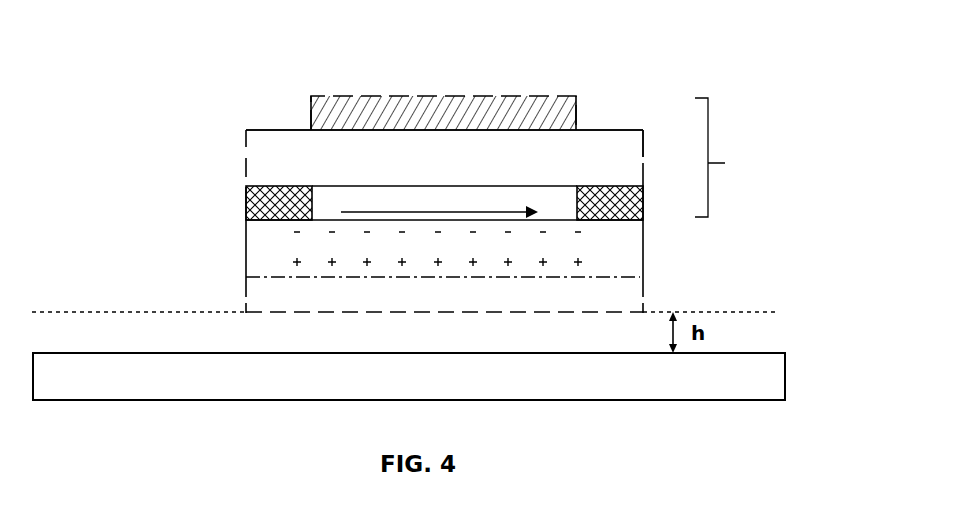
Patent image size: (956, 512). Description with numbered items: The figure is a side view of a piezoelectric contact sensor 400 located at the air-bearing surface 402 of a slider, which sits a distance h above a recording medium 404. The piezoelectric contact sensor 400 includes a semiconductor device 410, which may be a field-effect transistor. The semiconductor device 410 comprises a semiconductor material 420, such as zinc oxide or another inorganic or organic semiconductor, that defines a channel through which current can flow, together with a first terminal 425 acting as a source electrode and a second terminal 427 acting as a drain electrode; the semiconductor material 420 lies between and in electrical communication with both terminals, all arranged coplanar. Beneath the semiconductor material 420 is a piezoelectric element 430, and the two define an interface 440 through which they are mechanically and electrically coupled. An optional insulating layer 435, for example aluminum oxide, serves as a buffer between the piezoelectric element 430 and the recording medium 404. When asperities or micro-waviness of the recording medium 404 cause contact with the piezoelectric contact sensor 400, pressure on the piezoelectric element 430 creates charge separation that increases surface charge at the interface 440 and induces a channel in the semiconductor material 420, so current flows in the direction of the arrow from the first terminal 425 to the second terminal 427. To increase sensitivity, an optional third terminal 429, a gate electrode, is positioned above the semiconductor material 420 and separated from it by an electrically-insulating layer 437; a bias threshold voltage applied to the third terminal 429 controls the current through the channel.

The piezoelectric contact sensor 400 is at (199, 72).
The air-bearing surface 402 is at (752, 310).
The recording medium 404 is at (787, 390).
The semiconductor device 410 is at (733, 157).
The semiconductor material 420 is at (413, 198).
The first terminal 425 is at (280, 204).
The second terminal 427 is at (598, 197).
The third terminal 429 is at (505, 108).
The piezoelectric element 430 is at (272, 247).
The insulating layer 435 is at (272, 295).
The electrically-insulating layer 437 is at (612, 152).
The interface 440 is at (548, 218).